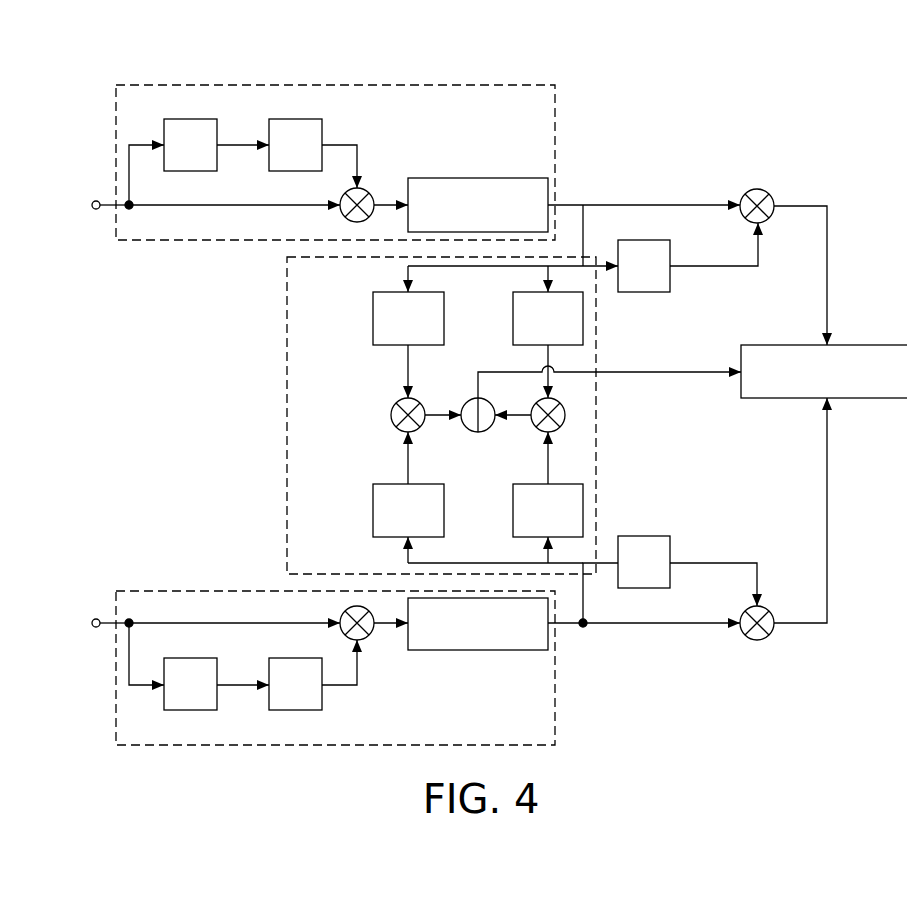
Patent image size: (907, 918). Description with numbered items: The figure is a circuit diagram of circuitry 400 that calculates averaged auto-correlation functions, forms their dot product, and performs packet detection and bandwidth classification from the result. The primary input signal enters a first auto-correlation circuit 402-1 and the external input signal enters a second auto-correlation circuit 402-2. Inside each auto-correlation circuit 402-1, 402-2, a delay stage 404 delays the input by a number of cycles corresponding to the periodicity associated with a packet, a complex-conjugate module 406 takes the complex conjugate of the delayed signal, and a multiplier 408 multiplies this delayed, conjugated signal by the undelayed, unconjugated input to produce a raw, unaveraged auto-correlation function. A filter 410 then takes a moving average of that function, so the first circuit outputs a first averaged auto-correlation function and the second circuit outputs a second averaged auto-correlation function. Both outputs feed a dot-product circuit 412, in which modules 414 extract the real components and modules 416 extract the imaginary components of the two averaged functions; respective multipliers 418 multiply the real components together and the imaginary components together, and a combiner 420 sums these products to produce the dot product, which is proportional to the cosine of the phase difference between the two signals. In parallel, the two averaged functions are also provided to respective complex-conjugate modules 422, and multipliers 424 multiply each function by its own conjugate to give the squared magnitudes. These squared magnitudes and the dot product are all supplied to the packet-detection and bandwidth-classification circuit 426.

The circuitry 400 is at (258, 37).
The first auto-correlation circuit 402-1 is at (335, 162).
The second auto-correlation circuit 402-2 is at (335, 668).
The delay stage 404 is at (173, 119).
The complex-conjugate module 406 is at (278, 119).
The multiplier 408 is at (345, 218).
The filter 410 is at (478, 414).
The dot-product circuit 412 is at (441, 415).
The modules 414 is at (381, 345).
The modules 416 is at (521, 345).
The multipliers 418 is at (396, 403).
The combiner 420 is at (466, 403).
The complex-conjugate modules 422 is at (655, 292).
The multipliers 424 is at (746, 193).
The packet-detection and bandwidth-classification circuit 426 is at (824, 371).